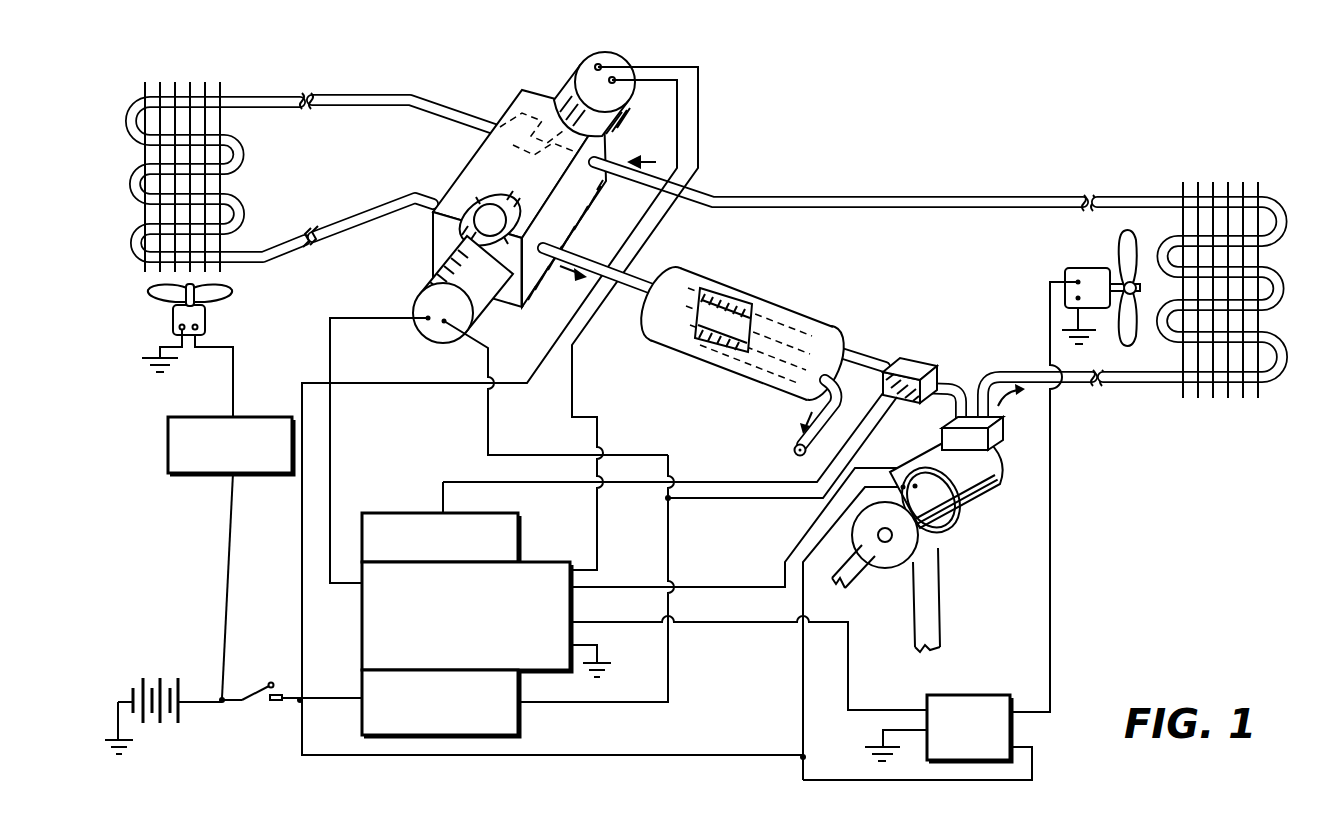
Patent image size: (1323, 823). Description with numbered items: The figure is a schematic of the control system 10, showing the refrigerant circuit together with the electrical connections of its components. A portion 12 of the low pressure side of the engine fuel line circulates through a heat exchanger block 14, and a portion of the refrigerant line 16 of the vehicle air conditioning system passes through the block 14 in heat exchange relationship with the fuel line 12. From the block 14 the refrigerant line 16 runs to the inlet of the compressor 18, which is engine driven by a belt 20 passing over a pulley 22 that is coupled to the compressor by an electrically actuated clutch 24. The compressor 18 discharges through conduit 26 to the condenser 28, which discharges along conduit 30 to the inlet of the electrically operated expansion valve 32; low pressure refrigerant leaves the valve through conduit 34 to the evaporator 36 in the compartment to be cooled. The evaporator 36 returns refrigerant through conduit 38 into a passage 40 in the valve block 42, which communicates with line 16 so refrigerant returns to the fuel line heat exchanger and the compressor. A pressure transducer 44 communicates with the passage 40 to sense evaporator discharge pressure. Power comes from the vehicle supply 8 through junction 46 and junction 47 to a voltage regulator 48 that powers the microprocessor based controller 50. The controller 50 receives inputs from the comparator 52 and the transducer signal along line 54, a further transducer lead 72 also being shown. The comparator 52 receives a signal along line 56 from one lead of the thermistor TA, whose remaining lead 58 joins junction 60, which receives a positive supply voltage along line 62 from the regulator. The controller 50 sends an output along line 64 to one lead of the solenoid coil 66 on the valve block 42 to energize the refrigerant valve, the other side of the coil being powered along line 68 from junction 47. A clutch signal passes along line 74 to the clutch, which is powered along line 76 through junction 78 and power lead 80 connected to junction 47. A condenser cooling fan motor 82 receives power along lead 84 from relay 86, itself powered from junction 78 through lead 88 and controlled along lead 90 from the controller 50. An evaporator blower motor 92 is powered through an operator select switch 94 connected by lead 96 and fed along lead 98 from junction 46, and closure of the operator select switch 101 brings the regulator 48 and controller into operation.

The vehicle supply 8 is at (167, 676).
The control system 10 is at (846, 192).
The portion of low pressure side of engine fuel line 12 is at (735, 367).
The heat exchanger block 14 is at (768, 303).
The refrigerant line 16 is at (644, 266).
The compressor 18 is at (956, 490).
The belt 20 is at (942, 600).
The pulley 22 is at (892, 566).
The electrically actuated clutch 24 is at (951, 524).
The conduit 26 is at (1073, 385).
The condenser 28 is at (1287, 278).
The conduit 30 is at (763, 195).
The electrically operated expansion valve 32 is at (497, 112).
The conduit 34 is at (372, 95).
The evaporator 36 is at (127, 187).
The conduit 38 is at (335, 222).
The passage 40 is at (478, 196).
The valve block 42 is at (582, 205).
The pressure transducer 44 is at (412, 290).
The junction 46 is at (226, 705).
The power junction 47 is at (298, 706).
The voltage regulator 48 is at (520, 720).
The microprocessor based controller 50 is at (360, 633).
The comparator 52 is at (385, 512).
The line 54 is at (332, 470).
The line 56 is at (470, 480).
The lead 58 is at (710, 484).
The junction 60 is at (665, 500).
The line 62 is at (620, 697).
The line 64 is at (570, 412).
The solenoid coil 66 is at (553, 82).
The line 68 is at (361, 384).
The actuator lead 72 is at (486, 413).
The line 74 is at (708, 586).
The line 76 is at (801, 695).
The junction 78 is at (801, 755).
The power lead 80 is at (522, 758).
The condenser cooling fan motor 82 is at (1093, 266).
The lead 84 is at (1052, 600).
The relay 86 is at (950, 694).
The lead 88 is at (902, 781).
The lead 90 is at (703, 625).
The evaporator blower motor 92 is at (207, 320).
The operator select switch 94 is at (166, 437).
The lead 96 is at (231, 383).
The lead 98 is at (226, 563).
The operator select switch 101 is at (258, 690).
The thermistor TA is at (904, 362).